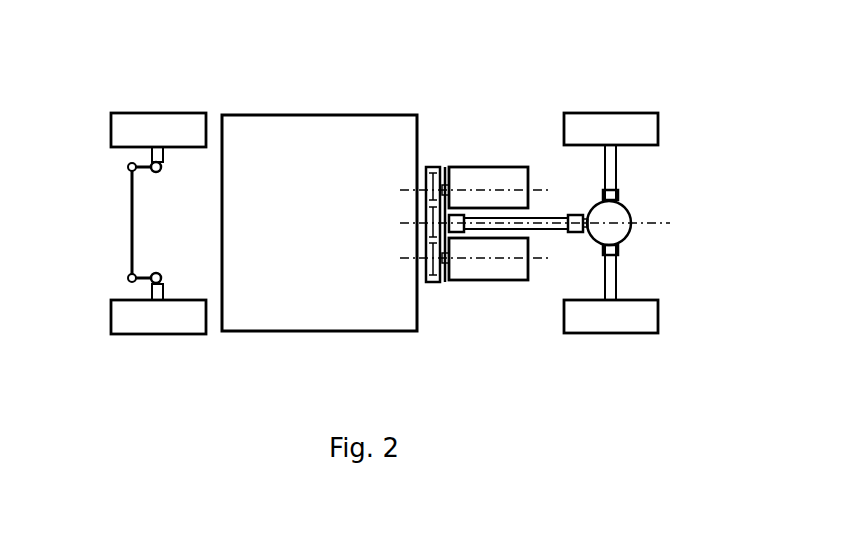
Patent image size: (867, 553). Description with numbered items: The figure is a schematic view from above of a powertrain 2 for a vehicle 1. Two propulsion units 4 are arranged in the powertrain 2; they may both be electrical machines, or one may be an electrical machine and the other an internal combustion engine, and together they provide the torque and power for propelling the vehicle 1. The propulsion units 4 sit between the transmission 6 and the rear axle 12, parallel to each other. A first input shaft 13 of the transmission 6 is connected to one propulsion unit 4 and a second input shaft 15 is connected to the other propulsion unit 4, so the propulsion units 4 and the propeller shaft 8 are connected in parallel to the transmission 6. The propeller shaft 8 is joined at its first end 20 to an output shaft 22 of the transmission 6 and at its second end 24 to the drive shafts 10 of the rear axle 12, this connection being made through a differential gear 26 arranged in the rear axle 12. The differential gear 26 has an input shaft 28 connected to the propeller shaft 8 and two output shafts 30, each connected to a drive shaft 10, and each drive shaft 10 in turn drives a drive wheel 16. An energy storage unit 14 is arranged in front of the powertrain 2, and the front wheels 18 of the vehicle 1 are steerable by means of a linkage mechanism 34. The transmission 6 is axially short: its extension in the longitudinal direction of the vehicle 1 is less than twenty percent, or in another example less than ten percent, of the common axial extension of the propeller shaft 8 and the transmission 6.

The vehicle 1 is at (217, 95).
The powertrain 2 is at (525, 328).
The propulsion units 4 is at (507, 167).
The transmission 6 is at (428, 167).
The propeller shaft 8 is at (558, 232).
The drive shafts 10 is at (617, 158).
The rear axle 12 is at (718, 267).
The first input shaft 13 is at (447, 167).
The energy storage unit 14 is at (265, 115).
The second input shaft 15 is at (445, 282).
The drive wheels 16 is at (613, 112).
The front wheels 18 is at (111, 130).
The first end 20 is at (453, 213).
The output shaft 22 is at (444, 205).
The second end 24 is at (575, 213).
The differential gear 26 is at (633, 212).
The input shaft 28 is at (588, 236).
The output shafts 30 is at (617, 195).
The steering linkage 34 is at (132, 258).